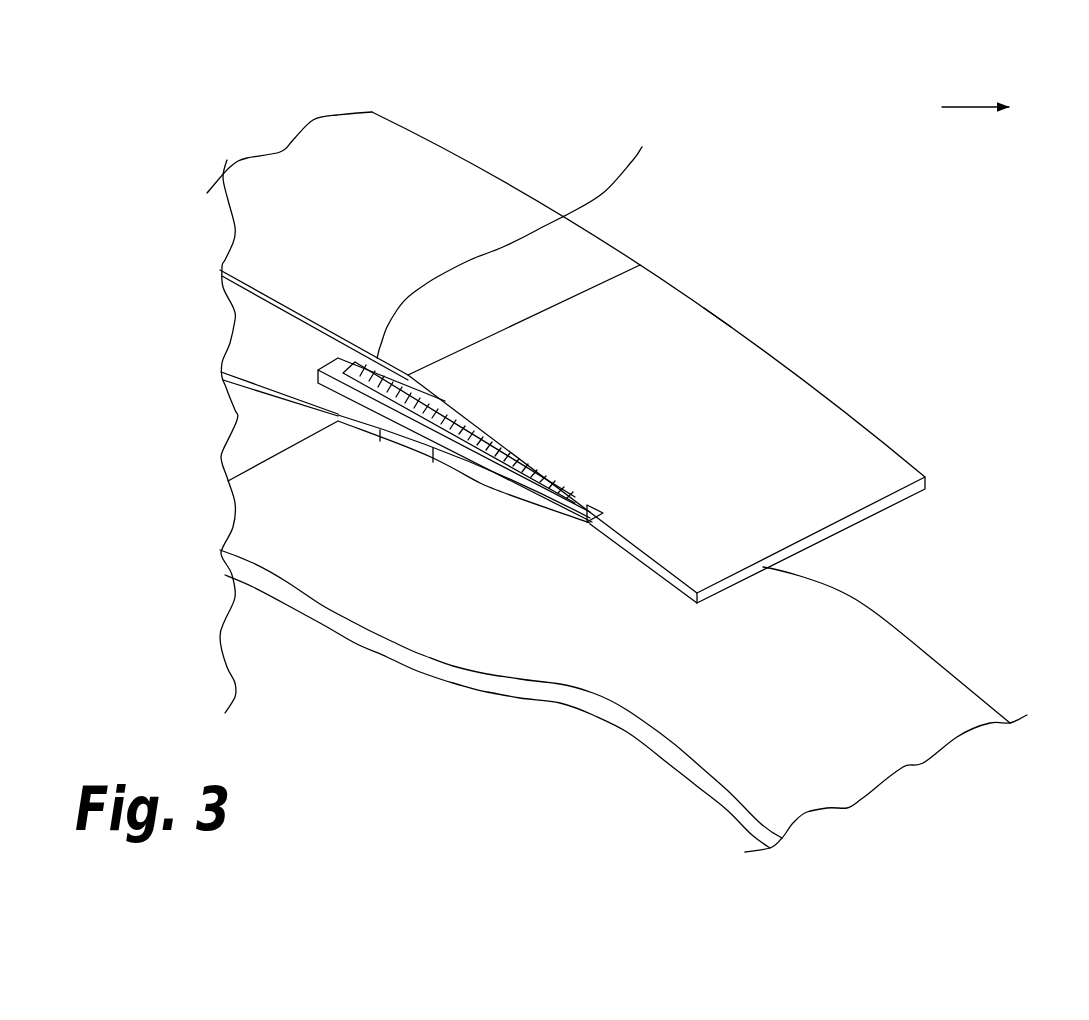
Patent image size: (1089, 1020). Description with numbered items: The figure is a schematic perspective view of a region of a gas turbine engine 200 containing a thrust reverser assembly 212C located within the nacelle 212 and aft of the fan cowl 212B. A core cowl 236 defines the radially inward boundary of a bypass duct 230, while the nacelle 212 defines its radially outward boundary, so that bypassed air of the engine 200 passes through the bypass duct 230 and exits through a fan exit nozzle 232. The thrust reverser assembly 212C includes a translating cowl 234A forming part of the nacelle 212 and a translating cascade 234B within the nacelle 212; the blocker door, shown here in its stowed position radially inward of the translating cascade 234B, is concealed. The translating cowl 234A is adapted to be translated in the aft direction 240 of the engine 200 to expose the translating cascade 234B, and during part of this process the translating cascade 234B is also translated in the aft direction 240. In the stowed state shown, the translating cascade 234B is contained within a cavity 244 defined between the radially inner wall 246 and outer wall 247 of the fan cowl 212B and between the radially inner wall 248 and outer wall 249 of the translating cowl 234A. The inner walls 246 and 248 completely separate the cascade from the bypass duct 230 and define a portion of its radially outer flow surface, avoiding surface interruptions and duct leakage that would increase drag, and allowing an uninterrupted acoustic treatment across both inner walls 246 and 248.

The gas turbine engine 200 is at (535, 768).
The nacelle 212 is at (396, 107).
The fan cowl 212B is at (478, 161).
The thrust reverser assembly 212C is at (642, 222).
The bypass duct 230 is at (236, 452).
The fan exit nozzle 232 is at (888, 570).
The translating cowl 234A is at (822, 390).
The translating cascade 234B is at (495, 318).
The core cowl 236 is at (868, 603).
The aft direction 240 is at (975, 106).
The cavity 244 is at (338, 414).
The radially inner wall of the fan cowl 246 is at (349, 432).
The radially outer wall of the fan cowl 247 is at (529, 195).
The radially inner wall of the translating cowl 248 is at (623, 553).
The radially outer wall of the translating cowl 249 is at (716, 312).